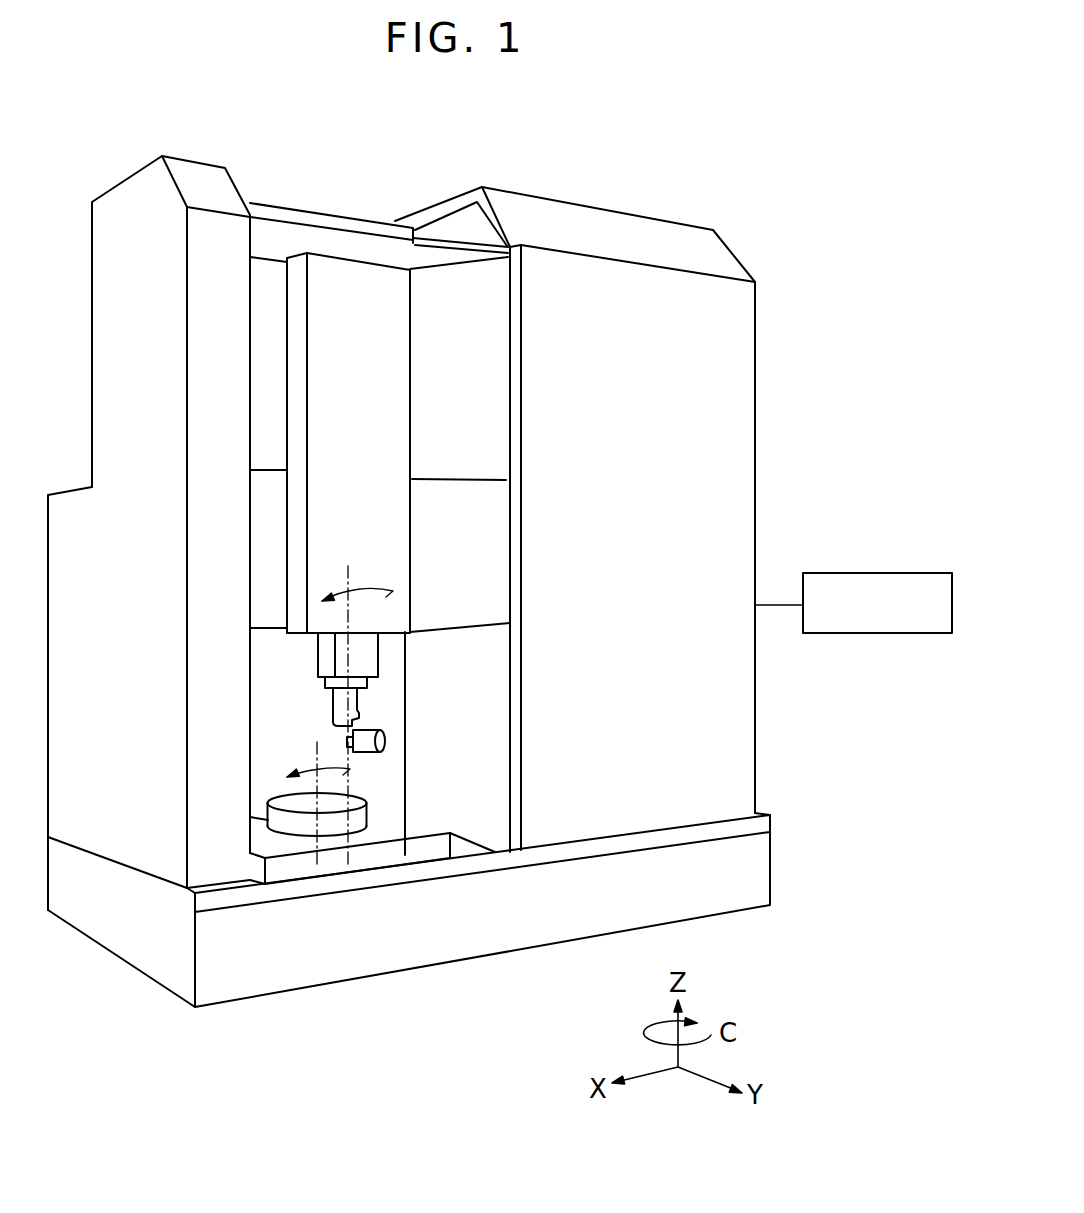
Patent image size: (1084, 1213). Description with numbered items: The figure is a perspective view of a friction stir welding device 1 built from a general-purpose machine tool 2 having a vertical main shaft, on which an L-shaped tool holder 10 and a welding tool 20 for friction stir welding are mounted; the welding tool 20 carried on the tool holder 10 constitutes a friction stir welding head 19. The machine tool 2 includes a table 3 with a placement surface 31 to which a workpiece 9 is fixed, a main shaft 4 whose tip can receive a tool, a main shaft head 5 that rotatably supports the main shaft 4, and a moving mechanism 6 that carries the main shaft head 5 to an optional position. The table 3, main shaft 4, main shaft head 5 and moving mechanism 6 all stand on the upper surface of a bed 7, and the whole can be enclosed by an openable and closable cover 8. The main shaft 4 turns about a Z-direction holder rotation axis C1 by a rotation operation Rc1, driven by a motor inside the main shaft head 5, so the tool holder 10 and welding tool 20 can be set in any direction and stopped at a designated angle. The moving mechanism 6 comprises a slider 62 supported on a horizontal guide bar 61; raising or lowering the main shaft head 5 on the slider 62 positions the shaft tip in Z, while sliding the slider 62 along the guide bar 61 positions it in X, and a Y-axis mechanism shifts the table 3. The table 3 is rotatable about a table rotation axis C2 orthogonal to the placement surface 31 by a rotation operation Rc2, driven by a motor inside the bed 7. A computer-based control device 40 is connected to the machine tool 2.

The friction stir welding device 1 is at (638, 151).
The machine tool 2 is at (803, 336).
The table 3 is at (305, 862).
The main shaft 4 is at (368, 685).
The main shaft head 5 is at (360, 662).
The moving mechanism 6 is at (383, 446).
The bed 7 is at (745, 879).
The cover 8 is at (728, 730).
The workpiece 9 is at (268, 803).
The tool holder 10 is at (320, 698).
The friction stir welding head 19 is at (122, 625).
The welding tool 20 is at (340, 736).
The placement surface 31 is at (410, 830).
The control device 40 is at (870, 572).
The guide bar 61 is at (472, 577).
The slider 62 is at (390, 517).
The holder rotation axis C1 is at (330, 575).
The table rotation axis C2 is at (316, 753).
The rotation operation of main shaft Rc1 is at (362, 581).
The rotation operation of table Rc2 is at (341, 779).